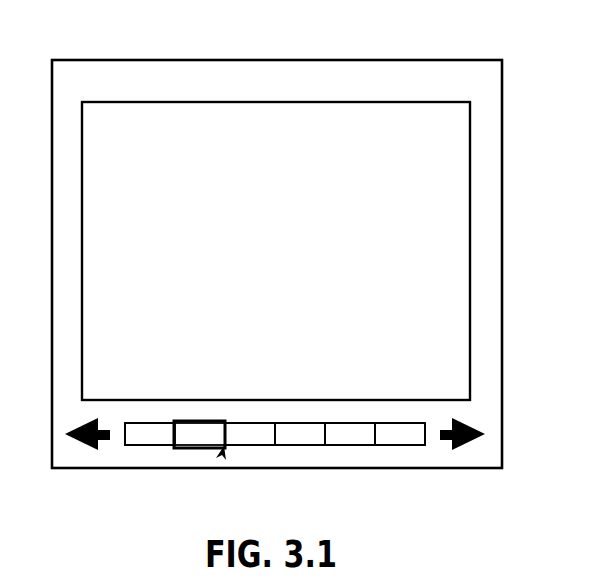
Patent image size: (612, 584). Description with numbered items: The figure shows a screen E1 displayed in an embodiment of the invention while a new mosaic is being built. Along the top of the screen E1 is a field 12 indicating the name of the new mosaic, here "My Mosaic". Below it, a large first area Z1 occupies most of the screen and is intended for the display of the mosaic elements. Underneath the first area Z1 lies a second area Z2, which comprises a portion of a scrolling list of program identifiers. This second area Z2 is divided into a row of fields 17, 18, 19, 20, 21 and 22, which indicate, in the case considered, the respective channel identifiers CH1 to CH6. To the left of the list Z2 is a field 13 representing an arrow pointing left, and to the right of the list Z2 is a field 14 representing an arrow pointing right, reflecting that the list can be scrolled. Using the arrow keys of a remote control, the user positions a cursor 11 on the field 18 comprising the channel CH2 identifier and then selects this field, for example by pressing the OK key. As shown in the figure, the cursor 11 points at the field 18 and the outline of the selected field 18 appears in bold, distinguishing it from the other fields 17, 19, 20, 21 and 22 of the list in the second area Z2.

The screen E1 is at (427, 60).
The first area Z1 is at (472, 128).
The second area Z2 is at (402, 422).
The field 12 is at (135, 70).
The cursor 11 is at (221, 455).
The field 13 is at (78, 445).
The field 14 is at (470, 446).
The field 17 is at (145, 446).
The field 18 is at (195, 448).
The field 19 is at (266, 446).
The field 20 is at (313, 446).
The field 21 is at (357, 446).
The field 22 is at (410, 446).